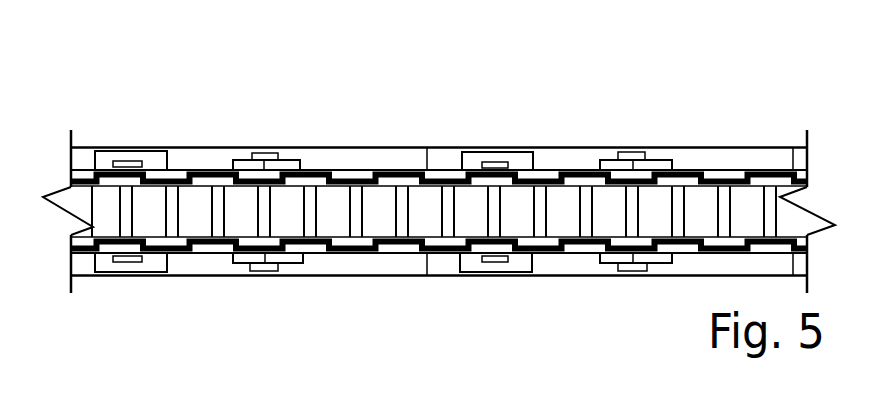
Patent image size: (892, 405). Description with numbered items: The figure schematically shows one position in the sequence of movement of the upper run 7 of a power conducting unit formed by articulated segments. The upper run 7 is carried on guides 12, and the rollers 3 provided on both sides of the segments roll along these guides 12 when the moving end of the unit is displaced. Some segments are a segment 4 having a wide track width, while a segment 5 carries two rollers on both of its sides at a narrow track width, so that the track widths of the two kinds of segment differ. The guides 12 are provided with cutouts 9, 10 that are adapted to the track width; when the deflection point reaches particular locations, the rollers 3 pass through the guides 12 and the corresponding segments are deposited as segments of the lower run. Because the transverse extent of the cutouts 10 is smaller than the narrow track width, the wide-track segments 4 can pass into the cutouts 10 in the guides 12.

The rollers 3 is at (127, 163).
The segment with wide track width 4 is at (265, 243).
The segment with narrow track width 5 is at (132, 245).
The upper run 7 is at (405, 203).
The cutouts 9 is at (157, 158).
The cutouts 10 is at (300, 165).
The guides 12 is at (745, 155).